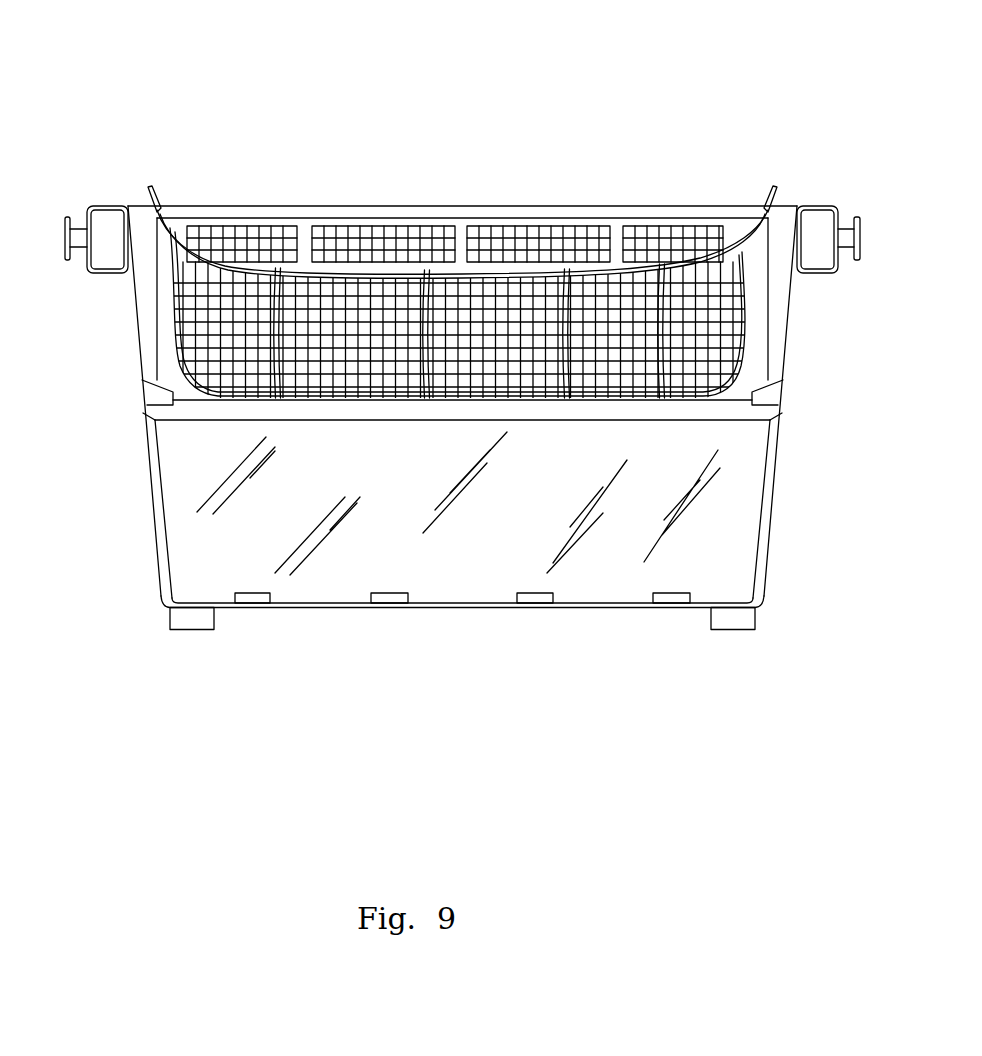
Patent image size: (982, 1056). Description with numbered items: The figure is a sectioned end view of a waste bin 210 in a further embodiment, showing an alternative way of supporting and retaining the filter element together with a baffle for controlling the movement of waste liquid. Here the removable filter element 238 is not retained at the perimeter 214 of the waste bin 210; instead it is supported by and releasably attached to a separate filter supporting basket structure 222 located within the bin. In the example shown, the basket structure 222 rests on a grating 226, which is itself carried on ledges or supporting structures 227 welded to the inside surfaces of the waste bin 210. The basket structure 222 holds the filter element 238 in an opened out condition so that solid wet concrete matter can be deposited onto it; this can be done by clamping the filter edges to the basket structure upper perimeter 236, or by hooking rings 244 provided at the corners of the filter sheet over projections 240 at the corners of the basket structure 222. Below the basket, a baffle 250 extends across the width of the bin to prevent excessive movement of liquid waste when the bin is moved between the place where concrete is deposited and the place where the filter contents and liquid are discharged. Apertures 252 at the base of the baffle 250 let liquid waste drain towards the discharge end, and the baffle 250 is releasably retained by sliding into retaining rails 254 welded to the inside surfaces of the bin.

The waste bin 210 is at (634, 112).
The perimeter 214 is at (98, 196).
The filter supporting basket structure 222 is at (352, 224).
The grating 226 is at (224, 416).
The supporting structures 227 is at (157, 399).
The basket structure upper perimeter 236 is at (643, 208).
The filter element 238 is at (497, 260).
The projections 240 is at (146, 178).
The rings 244 is at (170, 200).
The baffle 250 is at (458, 503).
The apertures 252 is at (254, 601).
The retaining rails 254 is at (162, 545).